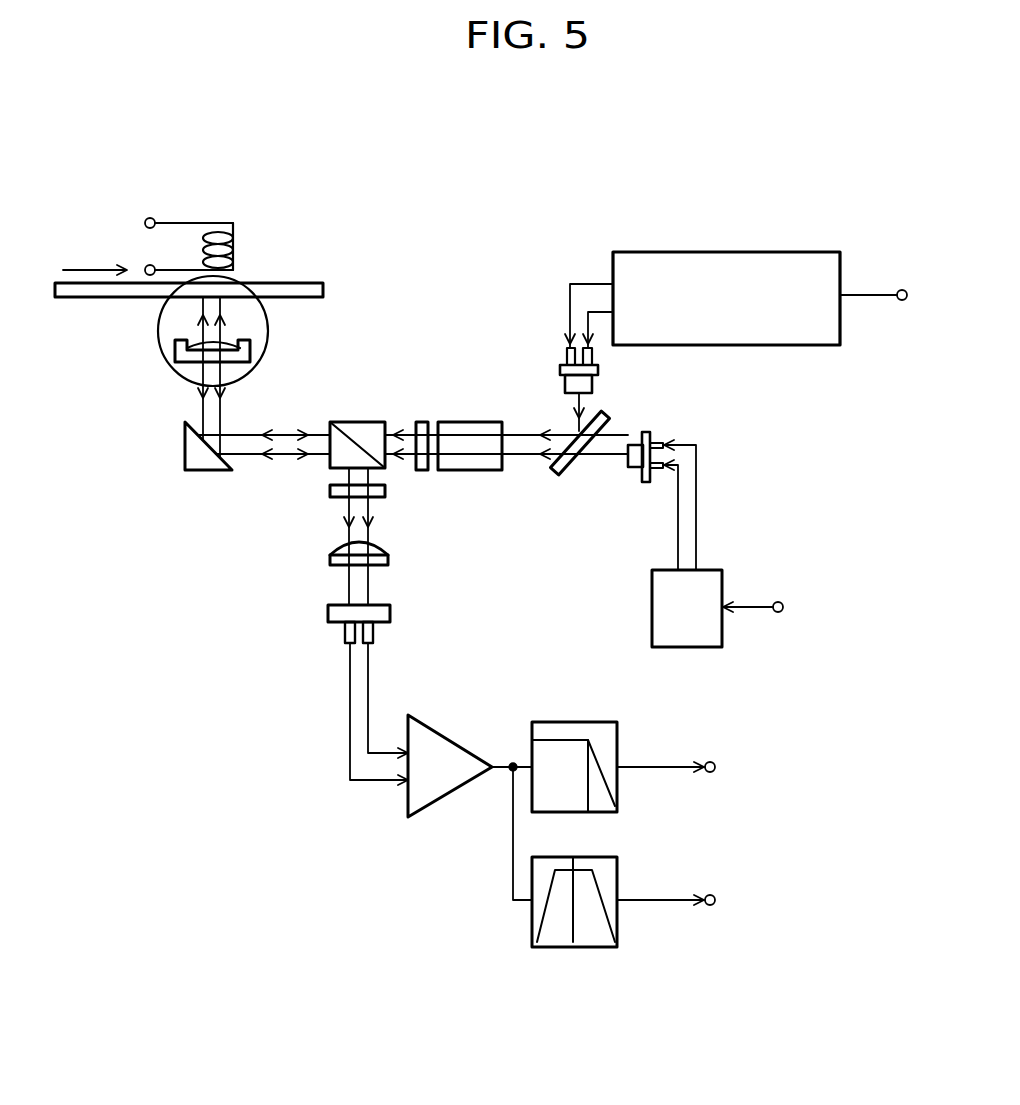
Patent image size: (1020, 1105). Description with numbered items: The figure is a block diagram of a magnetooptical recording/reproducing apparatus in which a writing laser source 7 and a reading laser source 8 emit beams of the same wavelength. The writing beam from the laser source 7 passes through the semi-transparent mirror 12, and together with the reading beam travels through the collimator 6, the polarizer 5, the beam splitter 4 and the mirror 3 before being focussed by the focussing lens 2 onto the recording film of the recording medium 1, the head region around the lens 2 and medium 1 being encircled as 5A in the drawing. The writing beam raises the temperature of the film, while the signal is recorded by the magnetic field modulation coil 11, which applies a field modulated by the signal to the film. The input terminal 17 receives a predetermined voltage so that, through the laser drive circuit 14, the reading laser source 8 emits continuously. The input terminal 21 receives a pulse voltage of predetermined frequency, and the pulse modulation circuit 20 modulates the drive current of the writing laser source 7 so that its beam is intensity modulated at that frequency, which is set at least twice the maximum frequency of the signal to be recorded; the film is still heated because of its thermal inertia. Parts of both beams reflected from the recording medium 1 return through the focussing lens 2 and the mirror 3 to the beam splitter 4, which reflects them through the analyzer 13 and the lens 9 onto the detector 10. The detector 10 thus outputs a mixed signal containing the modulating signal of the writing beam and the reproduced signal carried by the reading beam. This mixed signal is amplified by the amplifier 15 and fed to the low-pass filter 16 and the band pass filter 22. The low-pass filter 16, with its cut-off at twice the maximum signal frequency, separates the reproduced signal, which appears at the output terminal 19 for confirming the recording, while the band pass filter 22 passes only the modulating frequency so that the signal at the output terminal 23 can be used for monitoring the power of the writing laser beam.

The recording medium 1 is at (323, 293).
The focussing lens 2 is at (250, 350).
The mirror 3 is at (185, 458).
The beam splitter 4 is at (363, 422).
The polarizer 5 is at (421, 422).
The optical head 5A is at (266, 315).
The collimator 6 is at (480, 422).
The writing laser source 7 is at (592, 380).
The reading laser source 8 is at (647, 432).
The lens 9 is at (388, 552).
The detector 10 is at (390, 612).
The magnetic field modulation coil 11 is at (222, 222).
The semi-transparent mirror 12 is at (553, 470).
The analyzer 13 is at (330, 488).
The laser drive circuit 14 is at (705, 570).
The amplifier 15 is at (443, 737).
The low-pass filter 16 is at (617, 735).
The input terminal 17 is at (782, 600).
The output terminal 19 is at (712, 762).
The pulse modulation circuit 20 is at (723, 252).
The input terminal 21 is at (902, 290).
The band pass filter 22 is at (617, 877).
The output terminal 23 is at (712, 893).